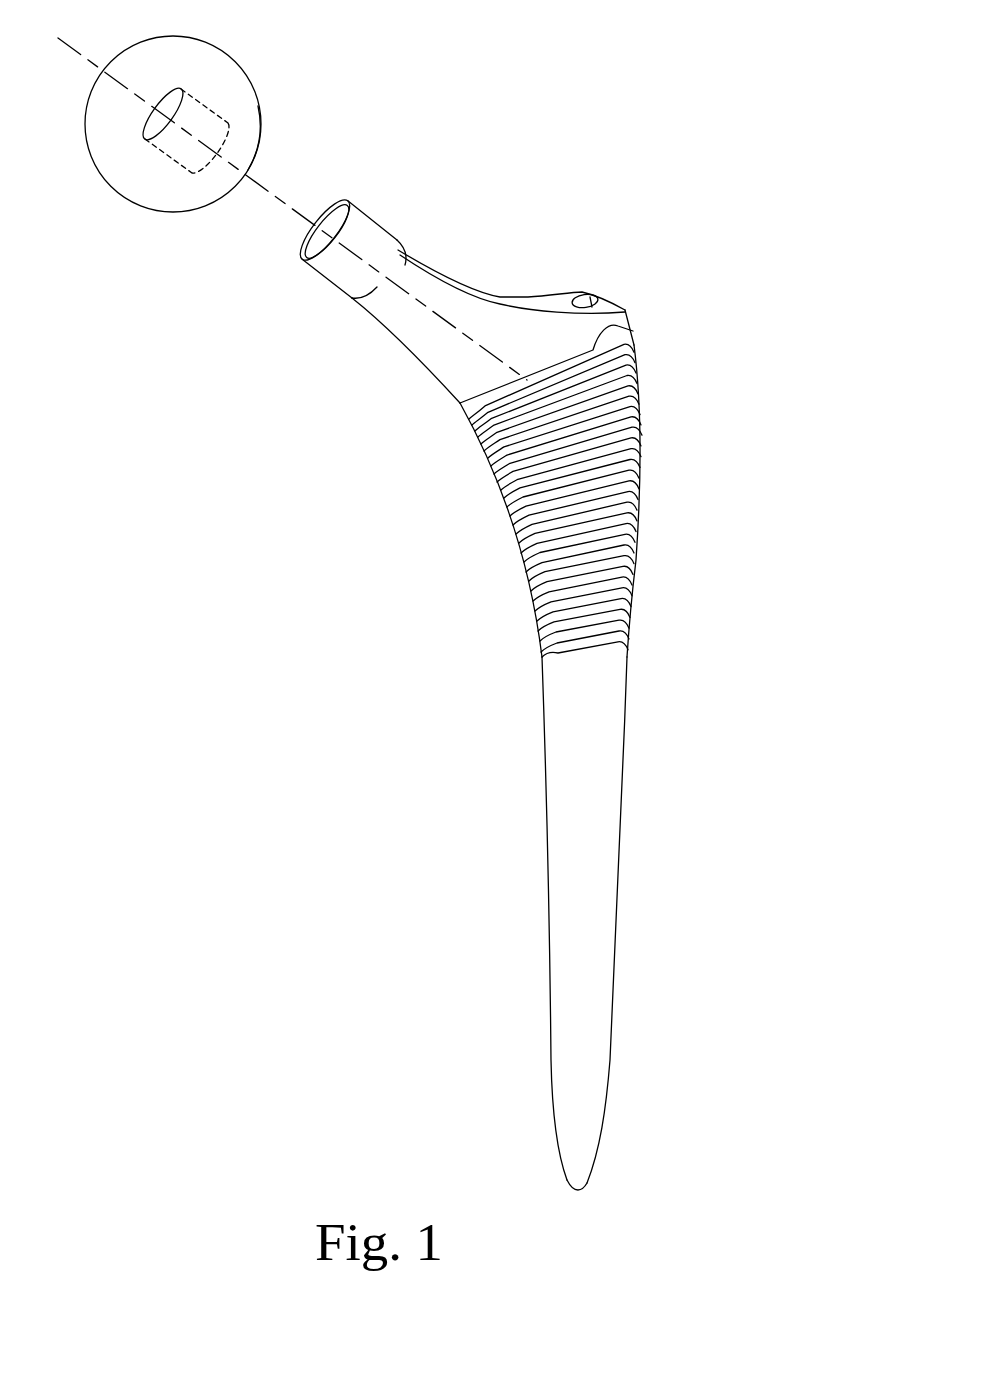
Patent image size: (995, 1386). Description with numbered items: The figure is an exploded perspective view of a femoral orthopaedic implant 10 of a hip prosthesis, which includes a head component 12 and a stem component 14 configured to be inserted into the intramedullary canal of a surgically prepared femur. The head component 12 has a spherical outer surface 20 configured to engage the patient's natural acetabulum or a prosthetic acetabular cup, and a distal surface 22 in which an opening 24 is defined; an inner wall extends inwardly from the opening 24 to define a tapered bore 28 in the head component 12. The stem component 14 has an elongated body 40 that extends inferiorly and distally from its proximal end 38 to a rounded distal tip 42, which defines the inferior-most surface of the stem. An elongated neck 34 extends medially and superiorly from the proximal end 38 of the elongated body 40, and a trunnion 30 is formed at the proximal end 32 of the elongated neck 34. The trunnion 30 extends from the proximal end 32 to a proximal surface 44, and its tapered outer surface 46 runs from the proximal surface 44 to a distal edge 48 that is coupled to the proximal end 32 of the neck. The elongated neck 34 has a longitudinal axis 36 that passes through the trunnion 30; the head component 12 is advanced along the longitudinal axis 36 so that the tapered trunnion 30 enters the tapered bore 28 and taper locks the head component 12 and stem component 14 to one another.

The femoral orthopaedic implant 10 is at (672, 86).
The head component 12 is at (300, 70).
The stem component 14 is at (690, 441).
The spherical outer surface 20 is at (100, 156).
The distal surface 22 is at (262, 128).
The opening 24 is at (210, 180).
The tapered bore 28 is at (157, 162).
The trunnion 30 is at (332, 271).
The proximal end 32 is at (630, 327).
The elongated neck 34 is at (440, 290).
The longitudinal axis 36 is at (297, 210).
The proximal end 38 is at (408, 257).
The elongated body 40 is at (600, 888).
The rounded distal tip 42 is at (585, 1191).
The proximal surface 44 is at (303, 253).
The tapered outer surface 46 is at (337, 277).
The distal edge 48 is at (350, 303).